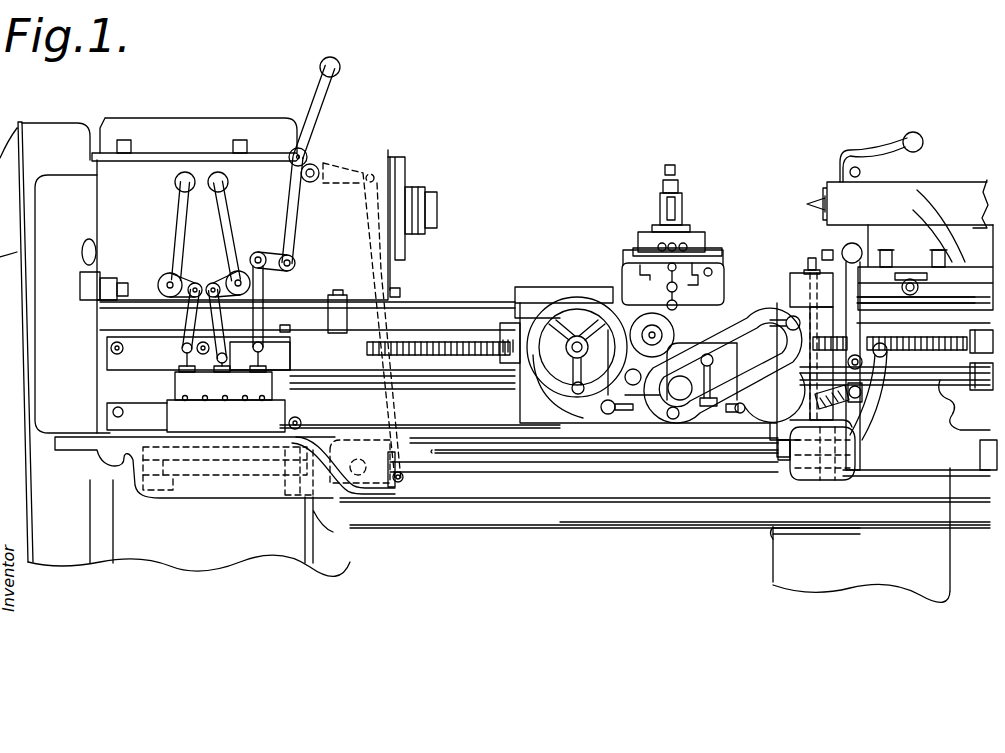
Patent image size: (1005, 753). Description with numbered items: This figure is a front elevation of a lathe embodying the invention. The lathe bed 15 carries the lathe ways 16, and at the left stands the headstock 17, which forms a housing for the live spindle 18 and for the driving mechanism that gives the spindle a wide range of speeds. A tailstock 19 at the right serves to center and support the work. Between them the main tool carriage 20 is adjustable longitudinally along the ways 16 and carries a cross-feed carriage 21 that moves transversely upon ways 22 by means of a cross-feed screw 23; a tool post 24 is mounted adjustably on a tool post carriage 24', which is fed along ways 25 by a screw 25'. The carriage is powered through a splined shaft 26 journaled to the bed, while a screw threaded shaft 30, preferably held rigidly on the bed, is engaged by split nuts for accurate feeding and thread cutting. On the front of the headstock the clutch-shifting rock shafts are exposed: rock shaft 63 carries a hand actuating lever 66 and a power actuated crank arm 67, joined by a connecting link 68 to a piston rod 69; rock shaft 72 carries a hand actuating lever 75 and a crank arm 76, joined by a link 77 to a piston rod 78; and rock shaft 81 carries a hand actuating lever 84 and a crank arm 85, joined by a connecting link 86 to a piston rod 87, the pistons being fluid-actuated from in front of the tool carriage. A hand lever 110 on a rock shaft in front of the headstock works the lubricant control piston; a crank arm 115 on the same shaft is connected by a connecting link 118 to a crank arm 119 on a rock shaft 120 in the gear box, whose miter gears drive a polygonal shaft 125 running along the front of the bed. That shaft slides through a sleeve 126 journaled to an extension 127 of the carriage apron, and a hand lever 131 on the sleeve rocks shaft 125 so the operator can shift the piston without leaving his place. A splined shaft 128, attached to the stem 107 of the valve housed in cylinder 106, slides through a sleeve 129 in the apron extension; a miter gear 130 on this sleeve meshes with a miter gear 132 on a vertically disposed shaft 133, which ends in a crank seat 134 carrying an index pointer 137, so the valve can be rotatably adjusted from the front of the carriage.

The lathe bed 15 is at (436, 415).
The lathe ways 16 is at (447, 307).
The headstock 17 is at (147, 168).
The live spindle 18 is at (437, 194).
The lathe tailstock 19 is at (878, 185).
The main tool carriage 20 is at (542, 297).
The cross-feed carriage 21 is at (733, 262).
The ways 22 is at (690, 277).
The cross-feed screw 23 is at (665, 290).
The tool post 24 is at (692, 195).
The tool post carriage 24' is at (701, 219).
The ways 25 is at (690, 239).
The screw 25' is at (652, 229).
The splined shaft 26 is at (324, 388).
The screw threaded shaft 30 is at (420, 338).
The rock shaft 63 is at (165, 277).
The hand actuating lever 66 is at (175, 217).
The power actuated crank arm 67 is at (189, 250).
The connecting link 68 is at (186, 300).
The piston rod 69 is at (184, 361).
The rock shaft 72 is at (245, 248).
The hand actuating lever 75 is at (223, 212).
The power actuated crank arm 76 is at (224, 284).
The link 77 is at (217, 323).
The piston rod 78 is at (223, 368).
The rock shaft 81 is at (296, 263).
The hand actuating lever 84 is at (297, 227).
The power actuated crank arm 85 is at (278, 272).
The connecting link 86 is at (293, 319).
The piston rod 87 is at (267, 364).
The cylinder 106 is at (220, 480).
The stem 107 is at (320, 465).
The hand lever 110 is at (328, 93).
The crank arm 115 is at (362, 170).
The connecting link 118 is at (380, 248).
The crank arm 119 is at (401, 484).
The rock shaft 120 is at (362, 472).
The polygonal shaft 125 is at (628, 463).
The sleeve 126 is at (840, 475).
The extension 127 is at (795, 480).
The splined shaft 128 is at (572, 455).
The sleeve 129 is at (792, 468).
The miter gear 130 is at (808, 475).
The hand lever 131 is at (862, 396).
The miter gear 132 is at (858, 433).
The vertically disposed shaft 133 is at (790, 292).
The crank seat 134 is at (813, 252).
The index pointer 137 is at (795, 280).